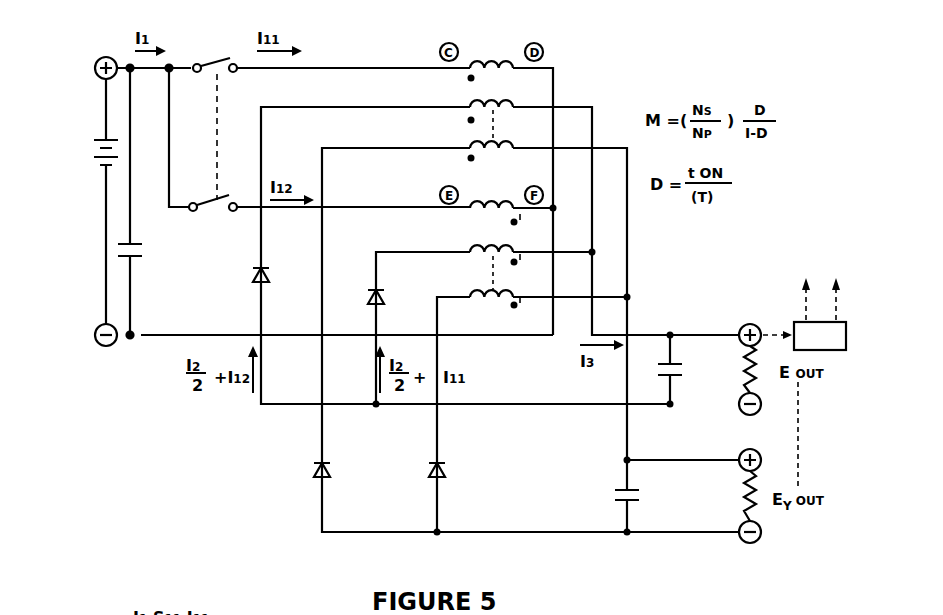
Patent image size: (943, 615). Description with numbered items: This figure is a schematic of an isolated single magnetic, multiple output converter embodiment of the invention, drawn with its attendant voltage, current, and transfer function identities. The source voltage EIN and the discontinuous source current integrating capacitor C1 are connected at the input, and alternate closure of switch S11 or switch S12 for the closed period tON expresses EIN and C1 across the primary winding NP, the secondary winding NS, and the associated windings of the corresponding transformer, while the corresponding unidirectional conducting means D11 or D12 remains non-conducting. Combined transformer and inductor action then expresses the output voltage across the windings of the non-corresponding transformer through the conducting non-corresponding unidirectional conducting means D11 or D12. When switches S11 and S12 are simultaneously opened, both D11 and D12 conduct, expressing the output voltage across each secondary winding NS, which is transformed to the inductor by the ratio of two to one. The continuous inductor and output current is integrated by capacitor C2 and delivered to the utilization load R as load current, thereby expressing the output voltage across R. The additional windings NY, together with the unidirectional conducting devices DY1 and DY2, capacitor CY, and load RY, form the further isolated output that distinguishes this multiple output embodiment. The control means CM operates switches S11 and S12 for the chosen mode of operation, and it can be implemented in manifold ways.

The source voltage EIN is at (69, 201).
The discontinuous source current integrating capacitor C1 is at (144, 201).
The switch S11 is at (215, 114).
The switch S12 is at (213, 215).
The primary winding NP is at (491, 121).
The secondary winding NS is at (491, 163).
The Ny winding NY is at (491, 231).
The unidirectional conducting means D11 is at (278, 277).
The unidirectional conducting means D12 is at (393, 298).
The auxiliary diode DY1 is at (339, 472).
The auxiliary diode DY2 is at (454, 472).
The capacitor C2 is at (657, 369).
The auxiliary output capacitor CY is at (618, 497).
The utilization load R is at (724, 369).
The auxiliary load resistor RY is at (722, 496).
The control means CM is at (815, 375).